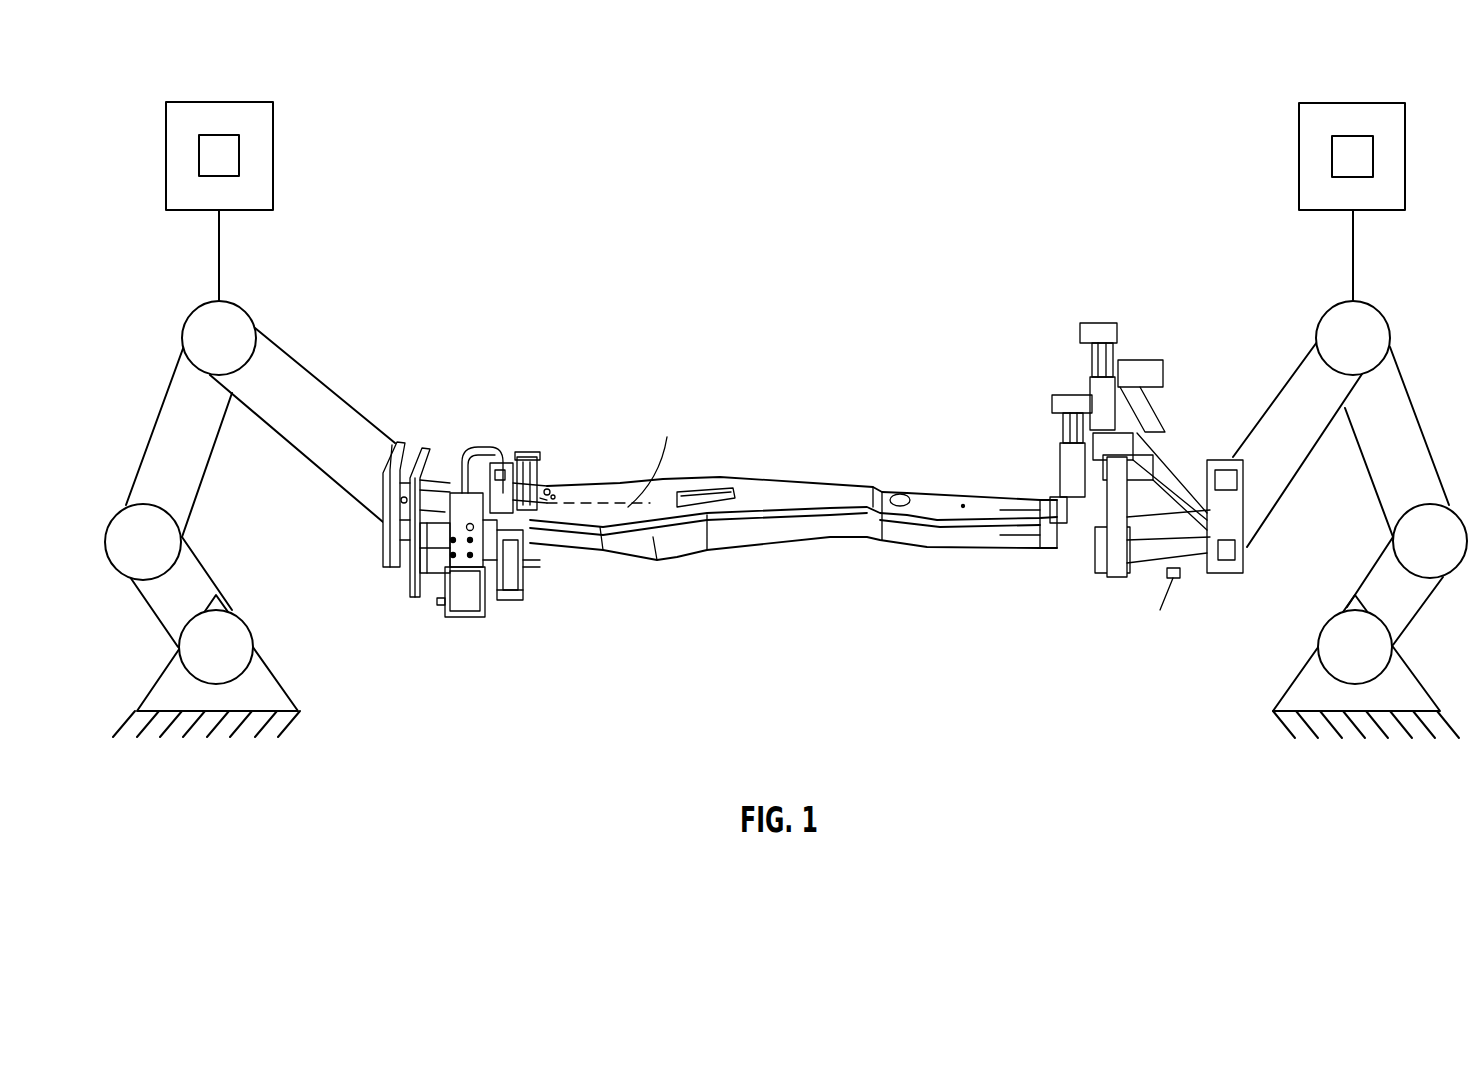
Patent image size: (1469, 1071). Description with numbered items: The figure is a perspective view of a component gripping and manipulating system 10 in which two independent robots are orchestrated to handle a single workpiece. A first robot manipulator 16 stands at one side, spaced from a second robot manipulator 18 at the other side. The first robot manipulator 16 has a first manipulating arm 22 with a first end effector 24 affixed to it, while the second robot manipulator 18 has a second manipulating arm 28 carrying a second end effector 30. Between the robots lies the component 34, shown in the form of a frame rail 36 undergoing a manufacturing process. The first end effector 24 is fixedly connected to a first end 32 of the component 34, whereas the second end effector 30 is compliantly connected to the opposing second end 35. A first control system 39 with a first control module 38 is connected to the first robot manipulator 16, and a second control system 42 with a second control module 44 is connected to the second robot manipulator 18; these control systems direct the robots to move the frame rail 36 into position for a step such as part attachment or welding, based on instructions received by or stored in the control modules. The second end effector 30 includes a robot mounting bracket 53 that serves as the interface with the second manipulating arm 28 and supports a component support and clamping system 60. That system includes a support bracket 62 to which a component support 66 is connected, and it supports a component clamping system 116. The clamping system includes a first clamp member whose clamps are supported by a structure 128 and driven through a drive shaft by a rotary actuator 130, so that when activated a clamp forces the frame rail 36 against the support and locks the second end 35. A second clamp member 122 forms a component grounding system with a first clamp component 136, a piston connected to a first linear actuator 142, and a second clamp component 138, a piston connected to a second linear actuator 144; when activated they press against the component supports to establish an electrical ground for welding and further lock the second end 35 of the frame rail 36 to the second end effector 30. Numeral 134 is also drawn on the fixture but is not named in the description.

The component gripping and manipulating system 10 is at (437, 290).
The first robot manipulator 16 is at (1297, 300).
The second robot manipulator 18 is at (297, 748).
The first manipulating arm 22 is at (1290, 455).
The first end effector 24 is at (1118, 557).
The second manipulating arm 28 is at (303, 388).
The second end effector 30 is at (403, 570).
The first end 32 is at (1035, 515).
The component 34 is at (857, 565).
The second end 35 is at (487, 573).
The frame rail 36 is at (827, 492).
The first control module 38 is at (1360, 160).
The first control system 39 is at (1352, 115).
The second control system 42 is at (222, 112).
The second control module 44 is at (208, 155).
The robot mounting bracket 53 is at (392, 483).
The component support and clamping system 60 is at (425, 608).
The support bracket 62 is at (427, 447).
The component support 66 is at (472, 445).
The component clamping system 116 is at (520, 607).
The second clamp member 122 is at (523, 442).
The structure 128 is at (507, 597).
The rotary actuator 130 is at (468, 600).
The clamp bracket 134 is at (538, 575).
The first clamp component 136 is at (537, 460).
The second clamp component 138 is at (553, 497).
The first linear actuator 142 is at (547, 500).
The second linear actuator 144 is at (547, 473).